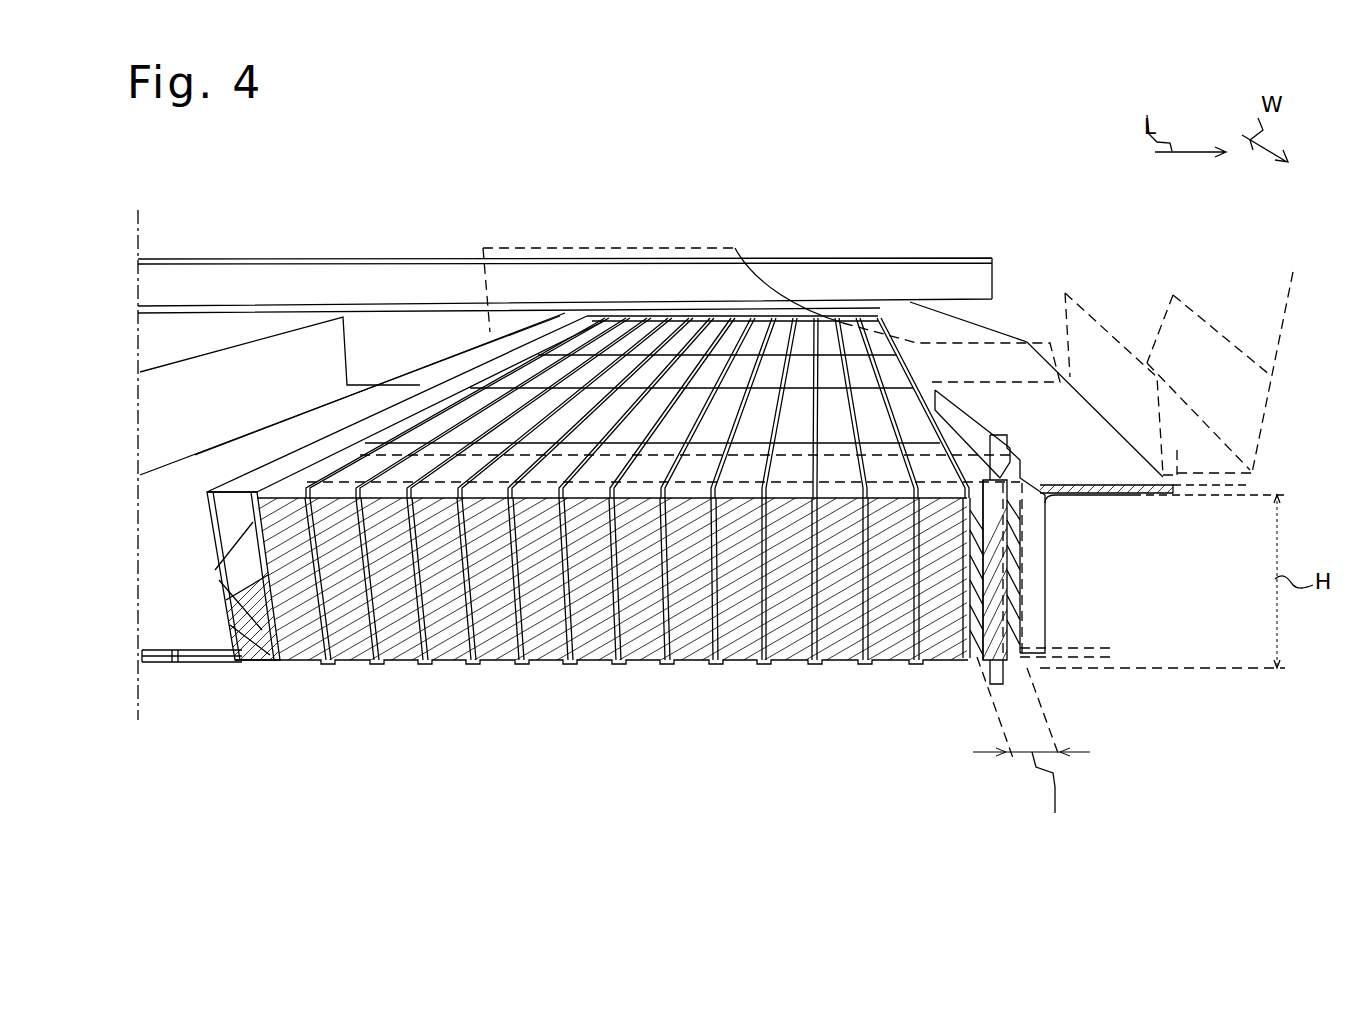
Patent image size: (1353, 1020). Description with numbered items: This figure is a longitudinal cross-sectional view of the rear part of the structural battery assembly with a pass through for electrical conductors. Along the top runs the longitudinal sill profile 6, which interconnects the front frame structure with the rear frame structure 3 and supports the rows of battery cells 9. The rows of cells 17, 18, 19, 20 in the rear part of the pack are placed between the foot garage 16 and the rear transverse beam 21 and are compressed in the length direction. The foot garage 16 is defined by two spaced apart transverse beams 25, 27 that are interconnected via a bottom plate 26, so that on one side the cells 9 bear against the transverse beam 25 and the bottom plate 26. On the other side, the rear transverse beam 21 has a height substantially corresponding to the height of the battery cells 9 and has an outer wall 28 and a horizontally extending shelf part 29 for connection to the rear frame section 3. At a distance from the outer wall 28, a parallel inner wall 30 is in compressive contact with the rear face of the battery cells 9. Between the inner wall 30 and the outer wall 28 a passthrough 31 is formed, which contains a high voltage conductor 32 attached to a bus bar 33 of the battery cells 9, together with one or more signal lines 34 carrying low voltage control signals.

The rear frame structure 3 is at (1250, 423).
The longitudinal sill profile 6 is at (413, 357).
The battery cells 9 is at (640, 643).
The foot garage 16 is at (180, 617).
The row of cells 17 is at (680, 340).
The row of cells 18 is at (593, 363).
The row of cells 19 is at (445, 427).
The row of cells 20 is at (333, 467).
The rear transverse beam 21 is at (965, 333).
The transverse beam 25 is at (255, 650).
The bottom plate 26 is at (143, 656).
The transverse beam 27 is at (230, 387).
The outer wall 28 is at (1048, 533).
The shelf part 29 is at (1103, 475).
The inner wall 30 is at (992, 686).
The passthrough 31 is at (970, 642).
The high voltage conductor 32 is at (1093, 672).
The bus bar 33 is at (555, 483).
The signal lines 34 is at (1095, 665).